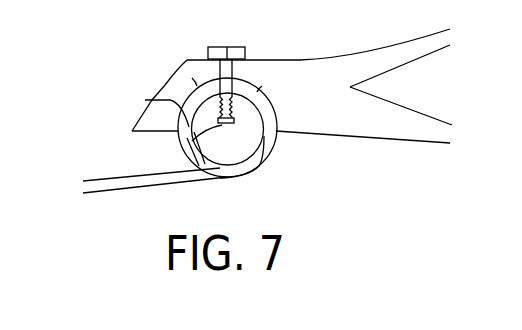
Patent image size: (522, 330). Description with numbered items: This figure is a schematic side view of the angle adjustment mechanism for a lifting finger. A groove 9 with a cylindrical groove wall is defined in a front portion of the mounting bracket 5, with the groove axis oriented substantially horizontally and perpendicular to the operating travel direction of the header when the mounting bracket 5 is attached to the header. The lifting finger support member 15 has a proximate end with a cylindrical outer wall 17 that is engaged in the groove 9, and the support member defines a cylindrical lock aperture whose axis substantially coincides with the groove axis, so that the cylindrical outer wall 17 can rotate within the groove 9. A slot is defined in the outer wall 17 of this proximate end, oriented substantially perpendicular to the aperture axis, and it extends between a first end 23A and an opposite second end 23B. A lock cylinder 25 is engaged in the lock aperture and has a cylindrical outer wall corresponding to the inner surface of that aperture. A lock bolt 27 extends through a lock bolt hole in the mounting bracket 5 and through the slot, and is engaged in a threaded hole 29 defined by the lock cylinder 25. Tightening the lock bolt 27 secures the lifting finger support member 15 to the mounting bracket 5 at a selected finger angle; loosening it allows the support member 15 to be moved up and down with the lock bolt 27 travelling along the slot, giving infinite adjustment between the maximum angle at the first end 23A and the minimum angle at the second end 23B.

The mounting bracket 5 is at (352, 58).
The groove 9 is at (145, 100).
The lifting finger support member 15 is at (108, 196).
The cylindrical outer wall 17 is at (279, 142).
The first end of the slot 23A is at (262, 86).
The second end of the slot 23B is at (192, 78).
The lock cylinder 25 is at (233, 152).
The lock bolt 27 is at (235, 47).
The threaded hole 29 is at (190, 166).